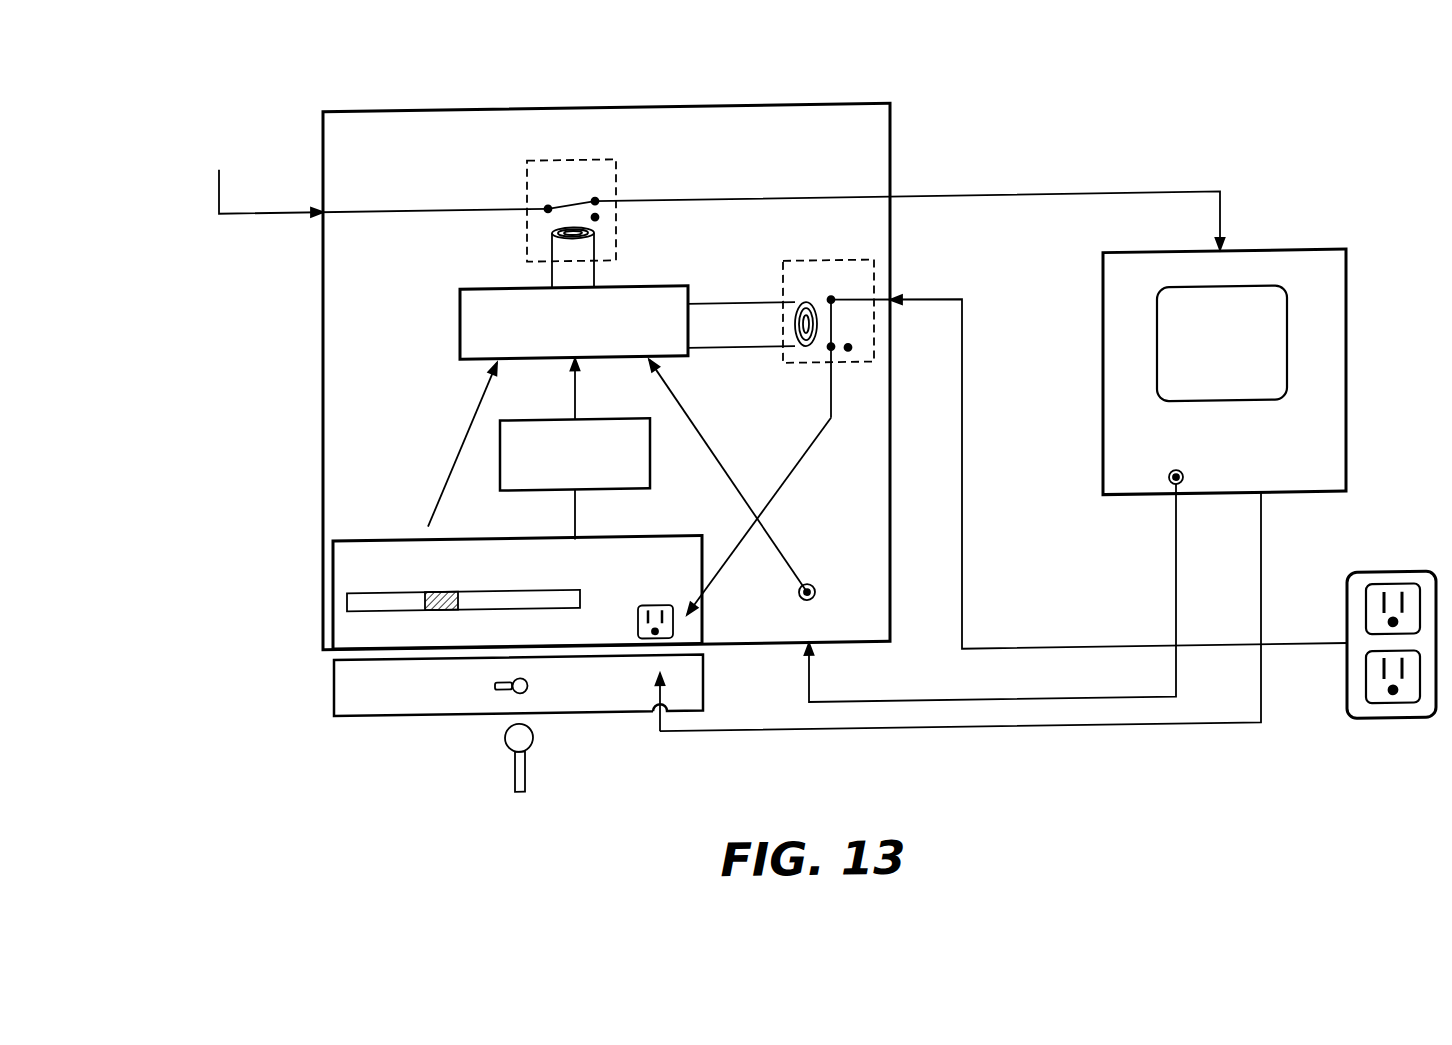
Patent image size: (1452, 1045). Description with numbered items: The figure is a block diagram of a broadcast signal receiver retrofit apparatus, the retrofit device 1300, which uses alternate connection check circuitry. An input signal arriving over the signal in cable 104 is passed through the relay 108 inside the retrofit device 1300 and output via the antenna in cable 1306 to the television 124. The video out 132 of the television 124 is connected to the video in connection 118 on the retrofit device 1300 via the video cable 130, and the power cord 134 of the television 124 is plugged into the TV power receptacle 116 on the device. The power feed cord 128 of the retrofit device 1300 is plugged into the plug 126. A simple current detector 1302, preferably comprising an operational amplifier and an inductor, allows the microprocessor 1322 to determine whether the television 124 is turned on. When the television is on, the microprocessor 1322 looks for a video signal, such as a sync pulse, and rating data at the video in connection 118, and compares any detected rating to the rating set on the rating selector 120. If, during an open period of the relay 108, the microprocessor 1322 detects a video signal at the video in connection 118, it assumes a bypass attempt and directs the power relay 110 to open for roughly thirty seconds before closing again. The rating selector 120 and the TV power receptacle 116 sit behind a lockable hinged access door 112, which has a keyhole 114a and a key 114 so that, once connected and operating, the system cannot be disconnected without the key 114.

The signal in cable 104 is at (267, 216).
The relay 108 is at (616, 170).
The power relay 110 is at (874, 285).
The access door 112 is at (703, 696).
The key 114 is at (513, 785).
The keyhole 114a is at (487, 690).
The TV power receptacle 116 is at (673, 637).
The video in connection 118 is at (815, 599).
The rating selector 120 is at (333, 583).
The television 124 is at (1346, 372).
The plug 126 is at (1378, 739).
The power feed cord 128 is at (962, 393).
The video cable 130 is at (1058, 710).
The video out 132 is at (1178, 512).
The power cord 134 is at (1020, 745).
The retrofit device 1300 is at (800, 74).
The current detector 1302 is at (650, 448).
The antenna in cable 1306 is at (1220, 230).
The microprocessor 1322 is at (543, 333).